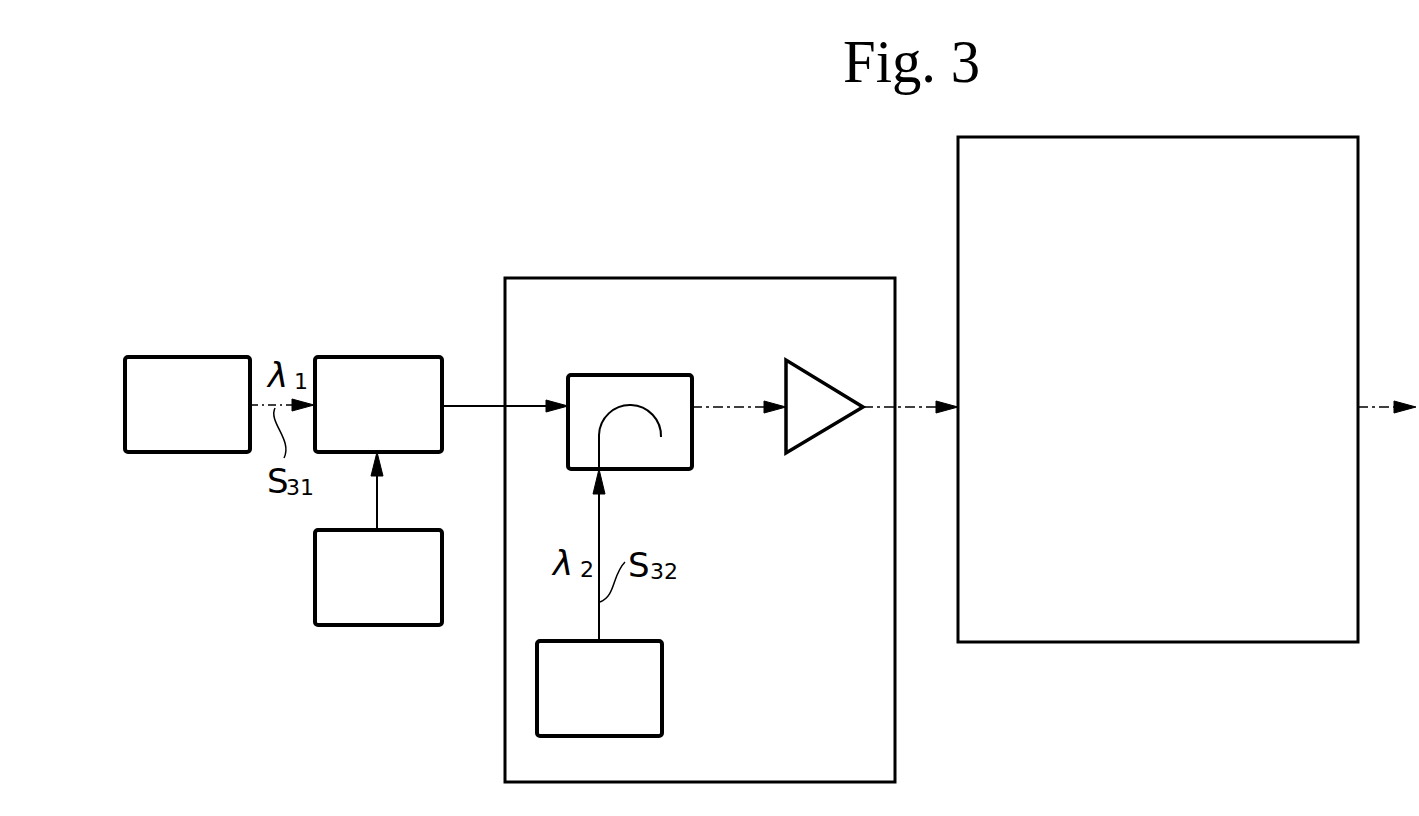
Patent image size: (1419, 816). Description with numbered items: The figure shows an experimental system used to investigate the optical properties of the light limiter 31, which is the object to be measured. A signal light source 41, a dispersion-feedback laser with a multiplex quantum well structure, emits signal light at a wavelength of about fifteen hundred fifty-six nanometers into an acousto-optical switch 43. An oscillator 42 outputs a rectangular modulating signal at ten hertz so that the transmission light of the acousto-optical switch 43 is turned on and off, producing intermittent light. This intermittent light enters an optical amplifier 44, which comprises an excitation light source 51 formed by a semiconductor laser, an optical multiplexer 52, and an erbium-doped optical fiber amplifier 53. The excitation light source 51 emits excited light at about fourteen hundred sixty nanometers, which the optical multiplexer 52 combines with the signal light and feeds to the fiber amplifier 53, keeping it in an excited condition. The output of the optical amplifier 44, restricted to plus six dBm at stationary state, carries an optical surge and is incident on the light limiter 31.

The light limiter 31 is at (958, 222).
The signal light source 41 is at (184, 357).
The oscillator 42 is at (407, 627).
The acousto-optical switch 43 is at (389, 357).
The optical amplifier 44 is at (666, 278).
The excitation light source 51 is at (662, 697).
The optical multiplexer 52 is at (617, 375).
The Er3+ doped optical fiber amplifier (EDFA) 53 is at (784, 378).